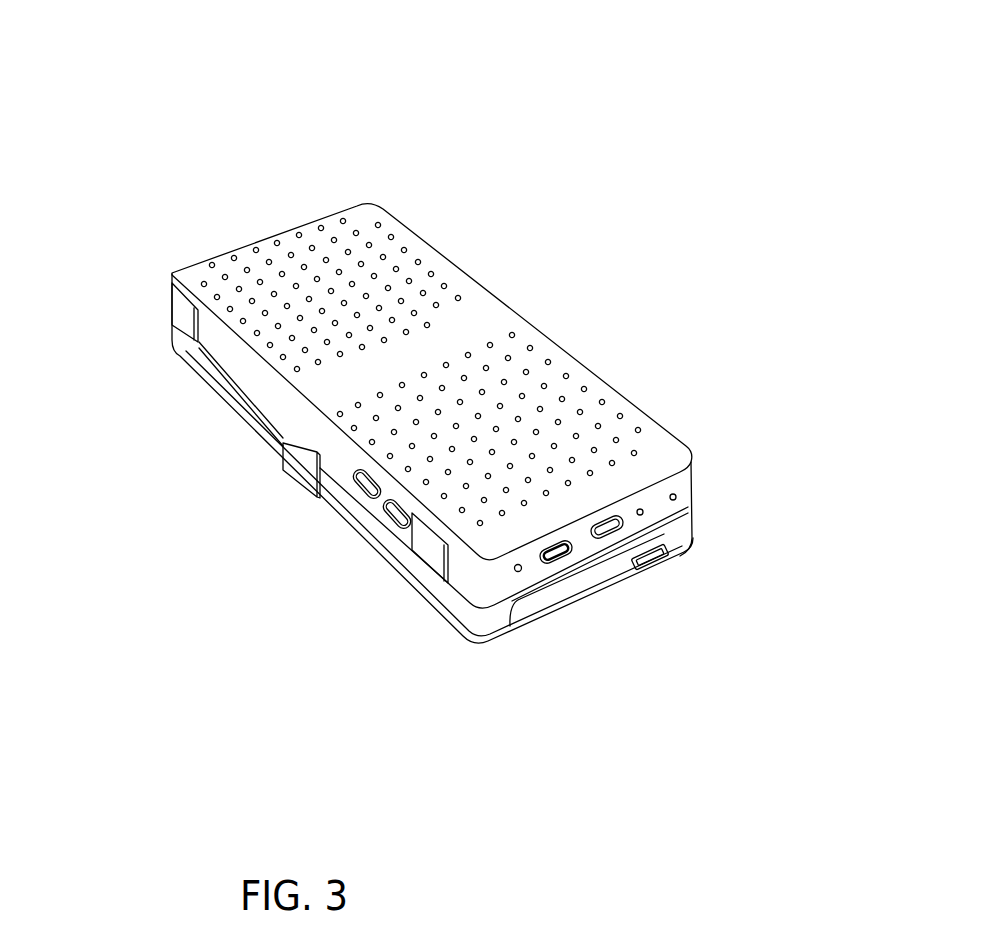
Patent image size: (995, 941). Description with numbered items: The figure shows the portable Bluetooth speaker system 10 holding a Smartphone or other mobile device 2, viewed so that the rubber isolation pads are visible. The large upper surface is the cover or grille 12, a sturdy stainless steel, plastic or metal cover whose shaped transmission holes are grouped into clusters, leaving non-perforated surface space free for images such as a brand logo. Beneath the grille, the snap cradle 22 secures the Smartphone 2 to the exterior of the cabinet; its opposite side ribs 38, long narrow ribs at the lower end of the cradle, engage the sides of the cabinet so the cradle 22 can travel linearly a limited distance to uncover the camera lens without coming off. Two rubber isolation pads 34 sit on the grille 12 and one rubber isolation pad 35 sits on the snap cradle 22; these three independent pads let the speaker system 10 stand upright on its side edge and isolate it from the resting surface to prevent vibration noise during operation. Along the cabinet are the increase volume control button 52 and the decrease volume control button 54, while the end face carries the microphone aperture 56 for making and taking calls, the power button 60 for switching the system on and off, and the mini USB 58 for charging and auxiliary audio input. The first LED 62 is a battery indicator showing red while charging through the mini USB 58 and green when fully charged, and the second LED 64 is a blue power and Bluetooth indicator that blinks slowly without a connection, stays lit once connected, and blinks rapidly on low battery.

The portable Bluetooth speaker system 10 is at (240, 122).
The cover or grille 12 is at (716, 376).
The Smartphone or other mobile devices 2 is at (568, 592).
The snap cradle 22 is at (480, 618).
The rubber isolation pads 34 is at (187, 333).
The side ribs 38 is at (228, 396).
The rubber isolation pad 35 is at (297, 484).
The decrease volume control button 54 is at (357, 492).
The increase volume control button 52 is at (392, 524).
The microphone aperture 56 is at (677, 497).
The second LED 64 is at (645, 516).
The power button 60 is at (607, 537).
The mini USB 58 is at (556, 565).
The first LED 62 is at (518, 574).